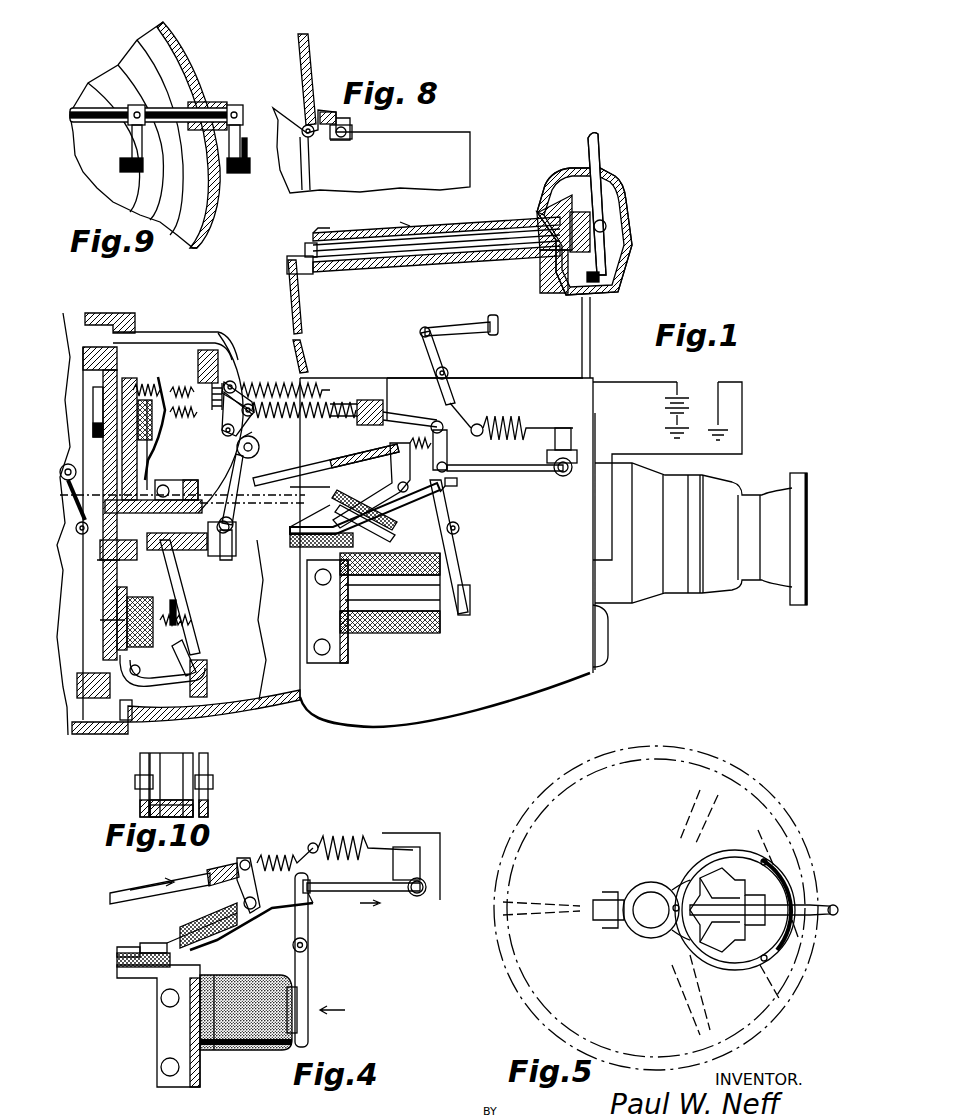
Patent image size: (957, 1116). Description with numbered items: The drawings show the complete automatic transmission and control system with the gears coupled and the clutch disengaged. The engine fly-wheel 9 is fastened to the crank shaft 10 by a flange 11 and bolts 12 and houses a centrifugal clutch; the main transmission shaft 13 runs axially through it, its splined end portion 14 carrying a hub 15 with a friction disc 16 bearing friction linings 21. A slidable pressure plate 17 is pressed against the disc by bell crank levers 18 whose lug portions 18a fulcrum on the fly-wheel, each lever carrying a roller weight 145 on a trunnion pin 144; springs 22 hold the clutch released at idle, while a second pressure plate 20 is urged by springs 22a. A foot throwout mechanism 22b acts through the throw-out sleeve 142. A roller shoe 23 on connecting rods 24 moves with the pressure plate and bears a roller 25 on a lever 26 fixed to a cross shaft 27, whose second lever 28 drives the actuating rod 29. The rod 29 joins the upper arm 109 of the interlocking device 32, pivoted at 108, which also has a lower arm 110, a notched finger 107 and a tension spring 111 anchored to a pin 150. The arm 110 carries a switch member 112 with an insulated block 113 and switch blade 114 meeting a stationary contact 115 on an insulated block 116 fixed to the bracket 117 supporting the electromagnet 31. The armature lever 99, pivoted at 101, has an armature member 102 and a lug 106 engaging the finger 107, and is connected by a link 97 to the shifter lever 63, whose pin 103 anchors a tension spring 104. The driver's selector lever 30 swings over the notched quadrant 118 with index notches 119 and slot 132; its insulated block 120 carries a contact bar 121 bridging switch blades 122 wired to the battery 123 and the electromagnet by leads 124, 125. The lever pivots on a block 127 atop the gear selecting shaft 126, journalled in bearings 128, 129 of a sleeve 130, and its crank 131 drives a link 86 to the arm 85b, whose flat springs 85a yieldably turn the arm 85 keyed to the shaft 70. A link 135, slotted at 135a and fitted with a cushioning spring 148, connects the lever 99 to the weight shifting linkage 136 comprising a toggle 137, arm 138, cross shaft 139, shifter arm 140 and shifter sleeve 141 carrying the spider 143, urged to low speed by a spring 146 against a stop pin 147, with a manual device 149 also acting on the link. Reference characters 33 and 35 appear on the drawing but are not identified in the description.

In FIG. 1, the fly-wheel 9 is at (108, 410).
In FIG. 1, the crank shaft 10 is at (140, 513).
In FIG. 1, the flange 11 is at (165, 518).
In FIG. 1, the bolts 12 is at (100, 605).
In FIG. 1, the main transmission shaft 13 is at (226, 556).
In FIG. 1, the splined end portion 14 is at (178, 514).
In FIG. 1, the hub 15 is at (168, 484).
In FIG. 1, the friction disc 16 is at (160, 455).
In FIG. 1, the pressure plate 17 is at (148, 400).
In FIG. 1, the centrifugally actuated levers 18 is at (160, 690).
In FIG. 10, the centrifugally actuated levers 18 is at (140, 805).
In FIG. 1, the lug portions 18a is at (197, 644).
In FIG. 1, the second pressure plate 20 is at (172, 390).
In FIG. 1, the friction linings 21 is at (150, 435).
In FIG. 1, the springs 22 is at (215, 375).
In FIG. 1, the springs 22a is at (195, 618).
In FIG. 1, the throwout mechanism 22b is at (196, 596).
In FIG. 9, the roller shoe 23 is at (128, 134).
In FIG. 1, the roller shoe 23 is at (128, 378).
In FIG. 1, the connecting rods 24 is at (90, 702).
In FIG. 9, the roller 25 is at (120, 161).
In FIG. 1, the roller 25 is at (75, 535).
In FIG. 9, the lever 26 is at (165, 102).
In FIG. 1, the lever 26 is at (72, 504).
In FIG. 9, the cross shaft 27 is at (212, 108).
In FIG. 1, the cross shaft 27 is at (73, 459).
In FIG. 9, the second lever 28 is at (240, 128).
In FIG. 1, the second lever 28 is at (84, 413).
In FIG. 9, the switch and interlock actuating rod 29 is at (250, 163).
In FIG. 1, the switch and interlock actuating rod 29 is at (283, 480).
In FIG. 4, the switch and interlock actuating rod 29 is at (183, 887).
In FIG. 1, the selector lever 30 is at (602, 138).
In FIG. 5, the selector lever 30 is at (818, 905).
In FIG. 1, the electromagnet 31 is at (410, 633).
In FIG. 4, the electromagnet 31 is at (248, 1025).
In FIG. 1, the interlocking device 32 is at (463, 551).
In FIG. 4, the interlocking device 32 is at (243, 858).
In FIG. 1, the housing 33 is at (448, 715).
In FIG. 1, the bottom wall 35 is at (250, 710).
In FIG. 1, the shifter lever 63 is at (563, 476).
In FIG. 4, the shifter lever 63 is at (426, 887).
In FIG. 8, the shaft 70 is at (343, 138).
In FIG. 8, the arm 85 is at (335, 140).
In FIG. 8, the flat springs 85a is at (330, 112).
In FIG. 8, the arm 85b is at (306, 160).
In FIG. 8, the link 86 is at (313, 44).
In FIG. 1, the link 86 is at (306, 325).
In FIG. 1, the link 97 is at (505, 473).
In FIG. 4, the link 97 is at (358, 885).
In FIG. 1, the armature lever 99 is at (462, 510).
In FIG. 4, the armature lever 99 is at (308, 935).
In FIG. 1, the pivot 101 is at (447, 528).
In FIG. 4, the pivot 101 is at (308, 948).
In FIG. 1, the armature member 102 is at (472, 590).
In FIG. 4, the armature member 102 is at (307, 1000).
In FIG. 1, the stub shaft 103 is at (563, 428).
In FIG. 4, the stub shaft 103 is at (418, 847).
In FIG. 1, the tension spring 104 is at (505, 418).
In FIG. 4, the tension spring 104 is at (343, 836).
In FIG. 1, the lug 106 is at (446, 489).
In FIG. 4, the lug 106 is at (310, 910).
In FIG. 1, the notched finger 107 is at (458, 480).
In FIG. 4, the notched finger 107 is at (314, 905).
In FIG. 1, the pivot 108 is at (408, 490).
In FIG. 4, the pivot 108 is at (257, 900).
In FIG. 1, the upper arm 109 is at (411, 458).
In FIG. 4, the upper arm 109 is at (235, 880).
In FIG. 1, the lower arm 110 is at (380, 512).
In FIG. 4, the lower arm 110 is at (245, 935).
In FIG. 1, the tension spring 111 is at (448, 452).
In FIG. 4, the tension spring 111 is at (278, 855).
In FIG. 1, the switch member 112 is at (352, 505).
In FIG. 4, the switch member 112 is at (190, 932).
In FIG. 1, the insulated block 113 is at (362, 520).
In FIG. 4, the insulated block 113 is at (212, 940).
In FIG. 1, the switch blade 114 is at (323, 510).
In FIG. 4, the switch blade 114 is at (155, 942).
In FIG. 1, the stationary contact member 115 is at (316, 489).
In FIG. 4, the stationary contact member 115 is at (130, 945).
In FIG. 1, the insulated block 116 is at (353, 541).
In FIG. 4, the insulated block 116 is at (117, 961).
In FIG. 1, the bracket 117 is at (326, 588).
In FIG. 4, the bracket 117 is at (132, 978).
In FIG. 1, the quadrant 118 is at (560, 172).
In FIG. 5, the quadrant 118 is at (780, 865).
In FIG. 1, the index notches 119 is at (585, 168).
In FIG. 5, the index notches 119 is at (796, 937).
In FIG. 1, the insulated block 120 is at (599, 277).
In FIG. 5, the insulated block 120 is at (636, 910).
In FIG. 1, the contact bar 121 is at (595, 292).
In FIG. 1, the switch blades 122 is at (575, 280).
In FIG. 5, the switch blades 122 is at (675, 888).
In FIG. 1, the battery 123 is at (685, 402).
In FIG. 1, the lead 124 is at (460, 398).
In FIG. 1, the lead 125 is at (626, 386).
In FIG. 1, the gear selecting shaft 126 is at (445, 237).
In FIG. 1, the block 127 is at (580, 212).
In FIG. 1, the bearing 128 is at (548, 210).
In FIG. 1, the bearing 129 is at (335, 230).
In FIG. 1, the supporting sleeve 130 is at (390, 380).
In FIG. 1, the crank 131 is at (292, 262).
In FIG. 1, the elongated slot 132 is at (613, 178).
In FIG. 1, the link 135 is at (340, 402).
In FIG. 1, the slot 135a is at (483, 425).
In FIG. 1, the weight shifting linkage 136 is at (248, 400).
In FIG. 1, the toggle 137 is at (252, 405).
In FIG. 1, the arm 138 is at (253, 432).
In FIG. 1, the cross shaft 139 is at (259, 447).
In FIG. 1, the shifter arm 140 is at (238, 495).
In FIG. 1, the shifter sleeve 141 is at (245, 515).
In FIG. 1, the clutch throw-out sleeve 142 is at (257, 555).
In FIG. 1, the weight shifting spider 143 is at (177, 612).
In FIG. 10, the weight shifting spider 143 is at (208, 805).
In FIG. 1, the trunnion pin 144 is at (207, 665).
In FIG. 10, the trunnion pin 144 is at (208, 780).
In FIG. 1, the roller weight 145 is at (115, 720).
In FIG. 10, the roller weight 145 is at (190, 753).
In FIG. 1, the tension spring 146 is at (288, 384).
In FIG. 1, the stop pin 147 is at (232, 381).
In FIG. 1, the cushioning spring 148 is at (365, 400).
In FIG. 1, the manual control means 149 is at (452, 325).
In FIG. 1, the pin 150 is at (528, 392).